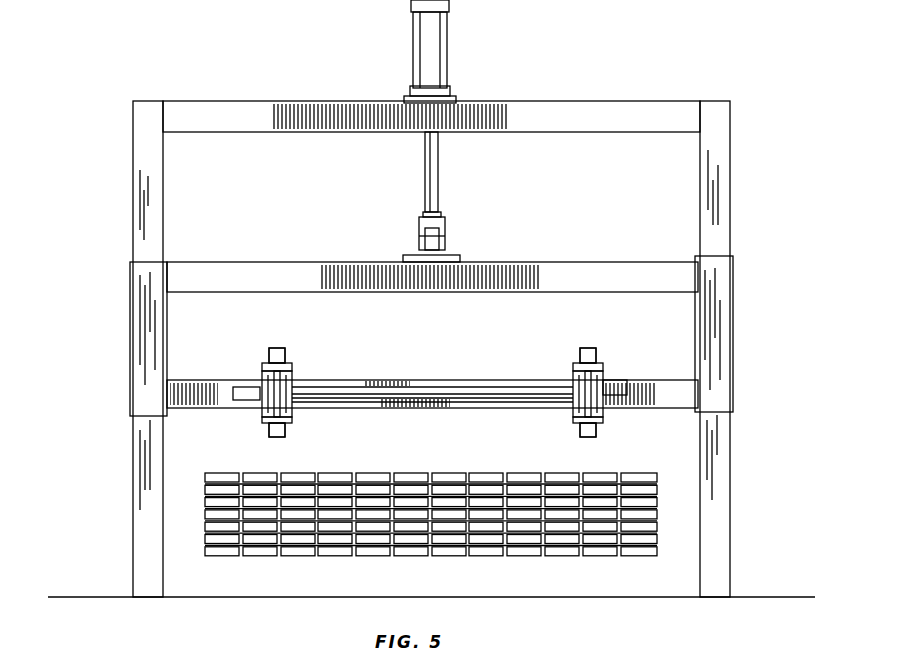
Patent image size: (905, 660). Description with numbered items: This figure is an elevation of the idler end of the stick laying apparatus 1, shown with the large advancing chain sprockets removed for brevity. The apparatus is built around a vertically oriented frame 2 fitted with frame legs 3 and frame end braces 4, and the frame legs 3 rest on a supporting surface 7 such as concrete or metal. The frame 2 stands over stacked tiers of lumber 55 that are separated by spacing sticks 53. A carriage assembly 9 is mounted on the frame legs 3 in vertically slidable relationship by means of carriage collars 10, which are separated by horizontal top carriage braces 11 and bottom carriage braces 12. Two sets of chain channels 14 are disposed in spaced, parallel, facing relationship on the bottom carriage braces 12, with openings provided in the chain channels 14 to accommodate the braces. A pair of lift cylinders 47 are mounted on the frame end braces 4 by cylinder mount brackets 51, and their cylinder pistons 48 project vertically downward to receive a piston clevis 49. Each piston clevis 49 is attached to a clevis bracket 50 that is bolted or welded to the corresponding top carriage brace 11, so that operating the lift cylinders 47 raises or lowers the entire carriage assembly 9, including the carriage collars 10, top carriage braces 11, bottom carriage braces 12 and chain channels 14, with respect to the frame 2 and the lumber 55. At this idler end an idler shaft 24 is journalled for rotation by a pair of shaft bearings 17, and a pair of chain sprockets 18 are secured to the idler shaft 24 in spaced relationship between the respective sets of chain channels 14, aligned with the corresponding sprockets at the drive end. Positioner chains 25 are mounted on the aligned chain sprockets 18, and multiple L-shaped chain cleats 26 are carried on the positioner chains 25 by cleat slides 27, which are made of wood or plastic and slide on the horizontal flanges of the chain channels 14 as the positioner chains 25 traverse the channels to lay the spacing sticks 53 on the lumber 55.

The stick laying apparatus 1 is at (698, 70).
The frame 2 is at (732, 138).
The frame legs 3 is at (133, 200).
The frame end braces 4 is at (630, 101).
The supporting surface 7 is at (103, 597).
The carriage assembly 9 is at (618, 262).
The carriage collars 10 is at (130, 290).
The top carriage braces 11 is at (540, 262).
The bottom carriage braces 12 is at (650, 380).
The chain channels 14 is at (262, 385).
The shaft bearings 17 is at (242, 402).
The chain sprockets 18 is at (292, 398).
The idler shaft 24 is at (395, 403).
The positioner chains 25 is at (578, 376).
The chain cleats 26 is at (283, 352).
The cleat slides 27 is at (266, 366).
The lift cylinders 47 is at (411, 46).
The cylinder pistons 48 is at (425, 160).
The piston clevis 49 is at (419, 230).
The clevis bracket 50 is at (462, 258).
The cylinder mount brackets 51 is at (404, 98).
The spacing sticks 53 is at (410, 474).
The lumber 55 is at (500, 478).